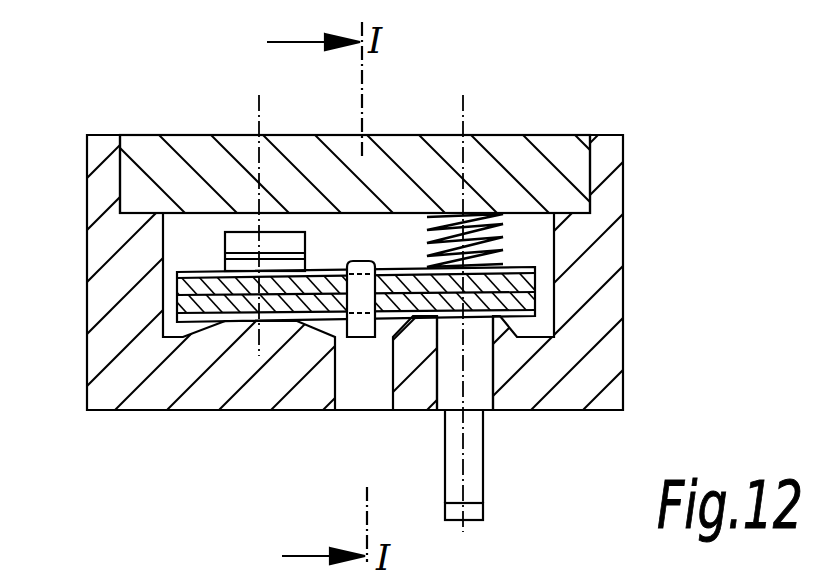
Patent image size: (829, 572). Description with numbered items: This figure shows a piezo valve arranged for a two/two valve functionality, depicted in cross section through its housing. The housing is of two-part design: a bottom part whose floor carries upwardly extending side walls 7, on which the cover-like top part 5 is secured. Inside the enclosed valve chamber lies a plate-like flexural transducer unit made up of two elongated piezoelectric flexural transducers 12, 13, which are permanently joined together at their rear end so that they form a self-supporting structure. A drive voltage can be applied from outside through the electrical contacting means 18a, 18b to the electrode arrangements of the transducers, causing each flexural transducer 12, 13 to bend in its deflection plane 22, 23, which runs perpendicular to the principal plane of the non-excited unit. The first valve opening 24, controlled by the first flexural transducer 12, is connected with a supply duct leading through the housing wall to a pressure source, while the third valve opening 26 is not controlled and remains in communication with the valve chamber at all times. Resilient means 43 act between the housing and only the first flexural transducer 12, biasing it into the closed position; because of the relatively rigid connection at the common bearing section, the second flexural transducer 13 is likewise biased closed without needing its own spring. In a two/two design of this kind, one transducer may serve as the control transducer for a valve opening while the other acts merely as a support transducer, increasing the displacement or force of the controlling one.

The top part 5 is at (556, 150).
The side walls 7 is at (132, 265).
The first flexural transducer 12 is at (415, 282).
The second flexural transducer 13 is at (321, 283).
The electrical contacting means 18a is at (475, 510).
The electrical contacting means 18b is at (472, 442).
The deflection plane 22 is at (463, 115).
The deflection plane 23 is at (258, 115).
The first valve opening 24 is at (478, 345).
The third valve opening 26 is at (349, 340).
The resilient means 43 is at (503, 247).